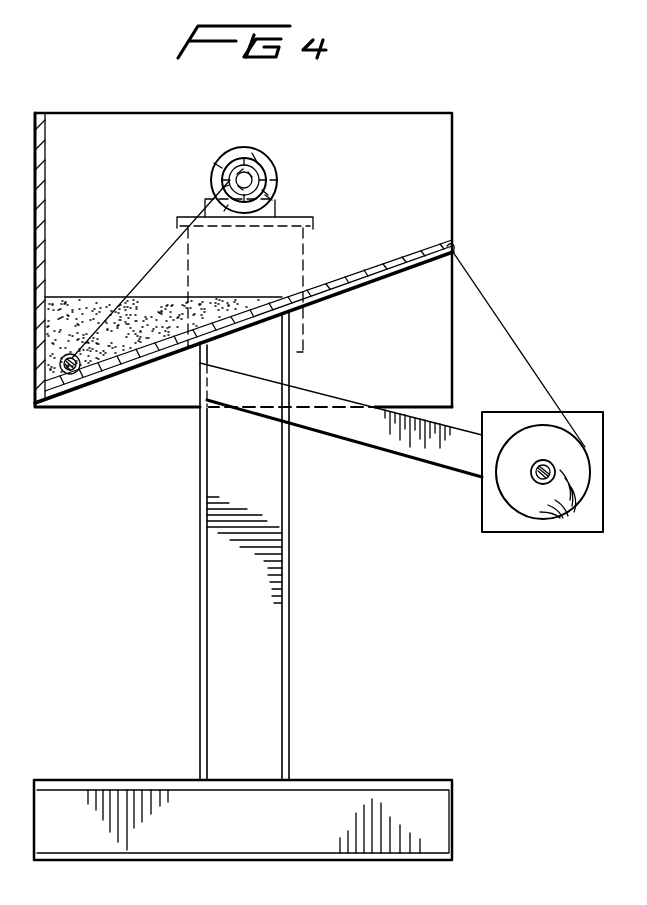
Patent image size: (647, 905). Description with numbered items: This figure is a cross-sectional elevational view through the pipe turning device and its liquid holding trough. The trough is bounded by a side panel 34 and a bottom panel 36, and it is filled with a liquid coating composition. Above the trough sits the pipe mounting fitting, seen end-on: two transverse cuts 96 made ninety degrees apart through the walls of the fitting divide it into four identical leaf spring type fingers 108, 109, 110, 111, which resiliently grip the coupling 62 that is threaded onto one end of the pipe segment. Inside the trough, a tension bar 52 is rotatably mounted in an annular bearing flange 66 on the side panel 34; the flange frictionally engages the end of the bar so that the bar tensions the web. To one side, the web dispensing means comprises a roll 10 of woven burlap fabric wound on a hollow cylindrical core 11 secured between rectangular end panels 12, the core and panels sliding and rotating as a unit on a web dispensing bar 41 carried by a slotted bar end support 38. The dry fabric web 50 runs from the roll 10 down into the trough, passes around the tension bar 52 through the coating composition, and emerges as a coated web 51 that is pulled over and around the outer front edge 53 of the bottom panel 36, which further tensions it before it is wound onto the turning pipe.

The roll 10 is at (580, 440).
The hollow cylindrical core 11 is at (568, 510).
The rectangular end panel 12 is at (535, 525).
The side panel 34 is at (440, 192).
The bottom panel 36 is at (350, 288).
The bar end support 38 is at (366, 440).
The web dispensing bar 41 is at (531, 475).
The fabric web 50 is at (518, 340).
The coated web 51 is at (142, 274).
The tension bar 52 is at (64, 376).
The outer front edge 53 is at (453, 252).
The coupling 62 is at (262, 162).
The bearing flange 66 is at (76, 376).
The transverse cut 96 is at (248, 158).
The leaf spring type finger 108 is at (222, 168).
The leaf spring type finger 109 is at (272, 172).
The leaf spring type finger 110 is at (262, 190).
The leaf spring type finger 111 is at (222, 188).